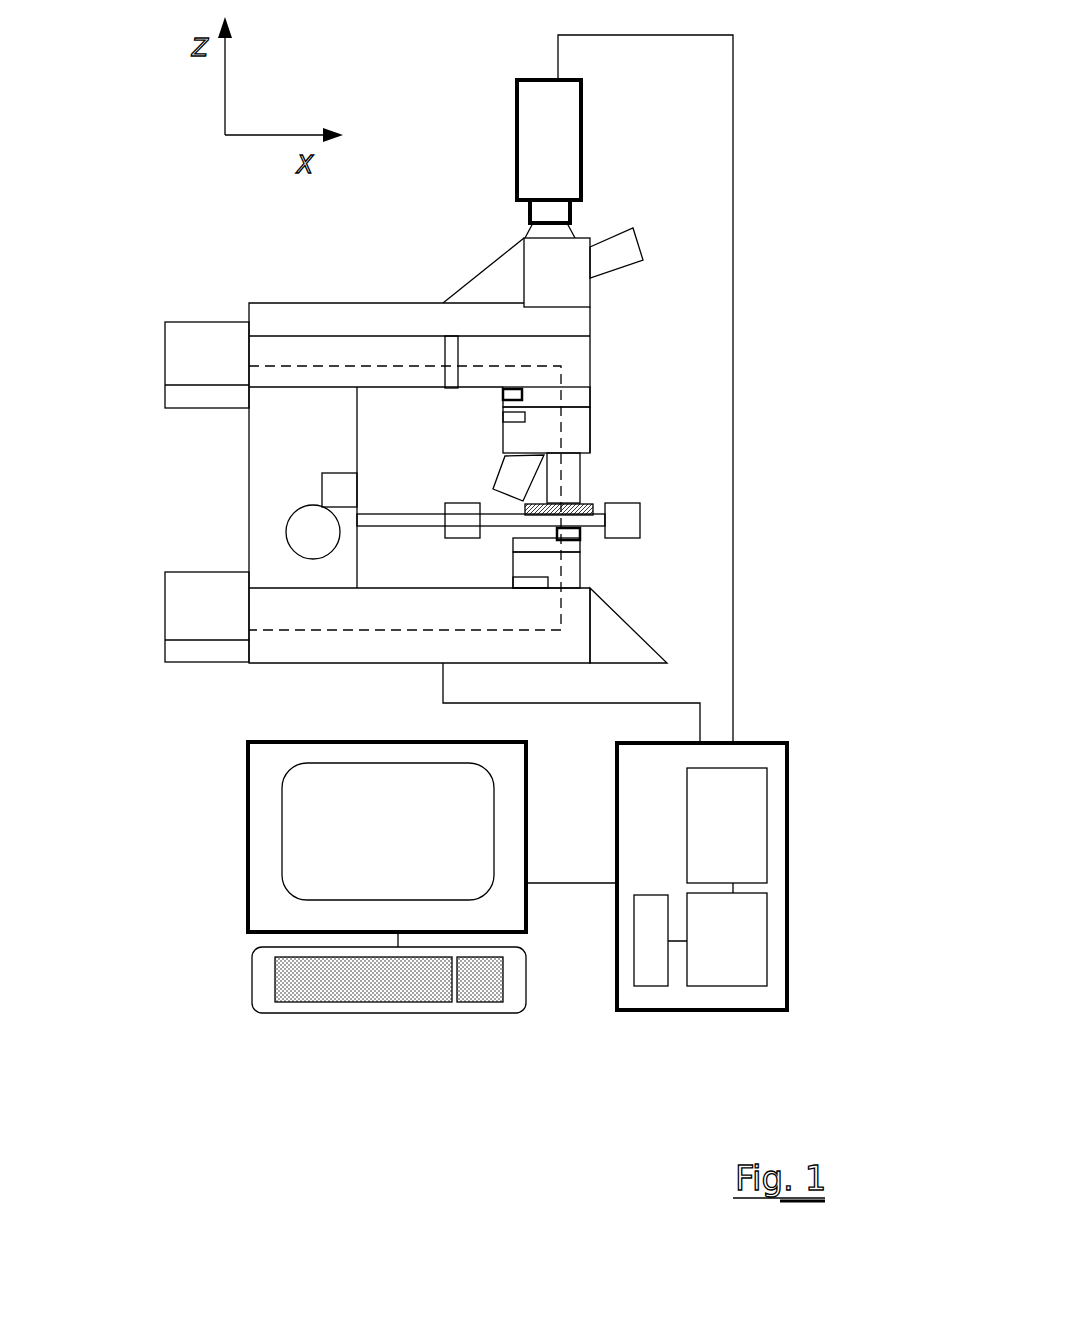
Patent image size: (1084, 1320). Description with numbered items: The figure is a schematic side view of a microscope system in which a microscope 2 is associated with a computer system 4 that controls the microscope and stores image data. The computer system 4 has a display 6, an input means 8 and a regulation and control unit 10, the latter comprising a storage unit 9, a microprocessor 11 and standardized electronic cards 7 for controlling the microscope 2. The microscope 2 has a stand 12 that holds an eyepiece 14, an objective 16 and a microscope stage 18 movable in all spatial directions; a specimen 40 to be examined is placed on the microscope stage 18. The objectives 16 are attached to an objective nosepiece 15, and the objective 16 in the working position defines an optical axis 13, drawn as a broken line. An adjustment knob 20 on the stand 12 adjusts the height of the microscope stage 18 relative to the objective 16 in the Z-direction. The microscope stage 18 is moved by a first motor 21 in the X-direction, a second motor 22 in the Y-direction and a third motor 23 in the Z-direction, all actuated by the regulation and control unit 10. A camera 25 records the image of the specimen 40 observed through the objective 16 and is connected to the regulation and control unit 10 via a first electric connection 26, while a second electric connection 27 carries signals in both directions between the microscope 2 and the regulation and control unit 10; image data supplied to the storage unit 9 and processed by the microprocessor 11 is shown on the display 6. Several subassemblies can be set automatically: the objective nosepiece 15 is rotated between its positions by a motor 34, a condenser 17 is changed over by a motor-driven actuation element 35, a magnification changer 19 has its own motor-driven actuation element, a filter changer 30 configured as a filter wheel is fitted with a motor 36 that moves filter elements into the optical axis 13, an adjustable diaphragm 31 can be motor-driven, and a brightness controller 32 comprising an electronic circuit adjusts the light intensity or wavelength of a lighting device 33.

The microscope 2 is at (320, 264).
The computer system 4 is at (371, 844).
The display 6 is at (389, 834).
The electronic cards 7 is at (640, 937).
The input means 8 is at (260, 997).
The storage unit 9 is at (757, 825).
The regulation and control unit 10 is at (701, 876).
The microprocessor 11 is at (757, 940).
The stand 12 is at (355, 303).
The optical axis 13 is at (590, 373).
The eyepiece 14 is at (628, 268).
The objective nosepiece 15 is at (577, 428).
The objective 16 is at (570, 484).
The condenser 17 is at (530, 568).
The microscope stage 18 is at (388, 513).
The magnification changer 19 is at (572, 548).
The adjustment knob 20 is at (295, 537).
The first motor 21 is at (633, 519).
The second motor 22 is at (462, 530).
The third motor 23 is at (322, 485).
The camera 25 is at (582, 160).
The first electric connection 26 is at (733, 666).
The second electric connection 27 is at (548, 705).
The filter changer 30 is at (570, 396).
The adjustable diaphragm 31 is at (441, 300).
The brightness controller 32 is at (172, 398).
The lighting device 33 is at (170, 328).
The motor 34 is at (510, 413).
The motor-driven actuation element 35 is at (515, 588).
The motor 36 is at (503, 395).
The specimen 40 is at (585, 503).